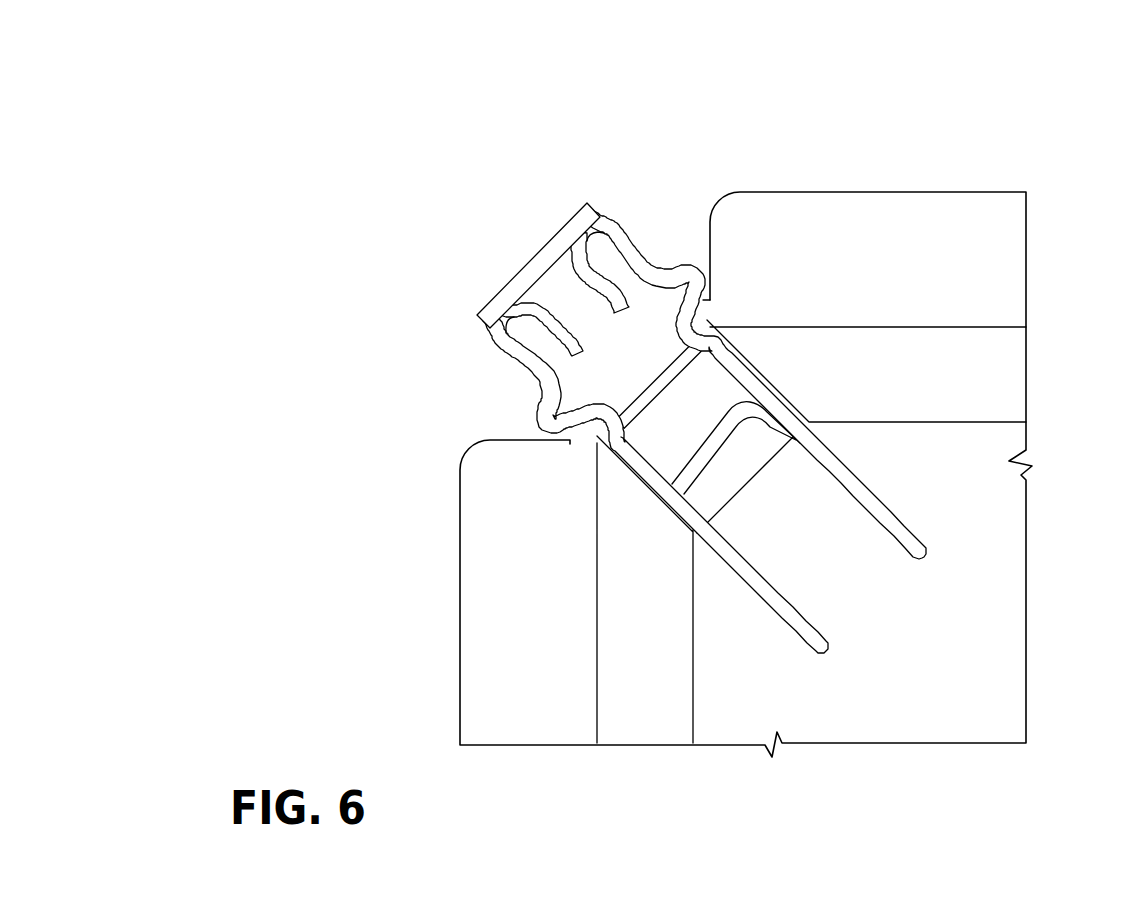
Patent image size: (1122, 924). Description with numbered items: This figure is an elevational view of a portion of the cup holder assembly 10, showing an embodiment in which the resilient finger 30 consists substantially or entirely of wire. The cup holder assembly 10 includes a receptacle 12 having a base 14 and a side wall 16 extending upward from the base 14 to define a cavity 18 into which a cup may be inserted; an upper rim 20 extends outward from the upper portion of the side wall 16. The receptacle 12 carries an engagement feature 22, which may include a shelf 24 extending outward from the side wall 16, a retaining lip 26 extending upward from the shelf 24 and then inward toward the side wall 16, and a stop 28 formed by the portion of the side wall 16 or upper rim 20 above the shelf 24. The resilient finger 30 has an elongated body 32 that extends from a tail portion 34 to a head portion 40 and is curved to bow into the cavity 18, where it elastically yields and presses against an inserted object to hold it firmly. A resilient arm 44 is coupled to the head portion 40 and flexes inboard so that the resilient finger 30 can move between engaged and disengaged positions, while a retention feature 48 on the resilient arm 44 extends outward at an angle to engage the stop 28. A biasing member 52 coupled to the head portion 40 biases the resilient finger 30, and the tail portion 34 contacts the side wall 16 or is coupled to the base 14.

The cup holder assembly 10 is at (584, 128).
The receptacle 12 is at (950, 186).
The base 14 is at (942, 702).
The side wall 16 is at (972, 384).
The cavity 18 is at (888, 665).
The upper rim 20 is at (972, 262).
The engagement feature 22 is at (744, 399).
The shelf 24 is at (597, 372).
The retaining lip 26 is at (543, 260).
The stop 28 is at (695, 348).
The resilient finger 30 is at (726, 568).
The elongated body 32 is at (875, 500).
The tail portion 34 is at (750, 420).
The head portion 40 is at (535, 402).
The resilient arm 44 is at (642, 277).
The retention feature 48 is at (688, 298).
The biasing member 52 is at (578, 255).